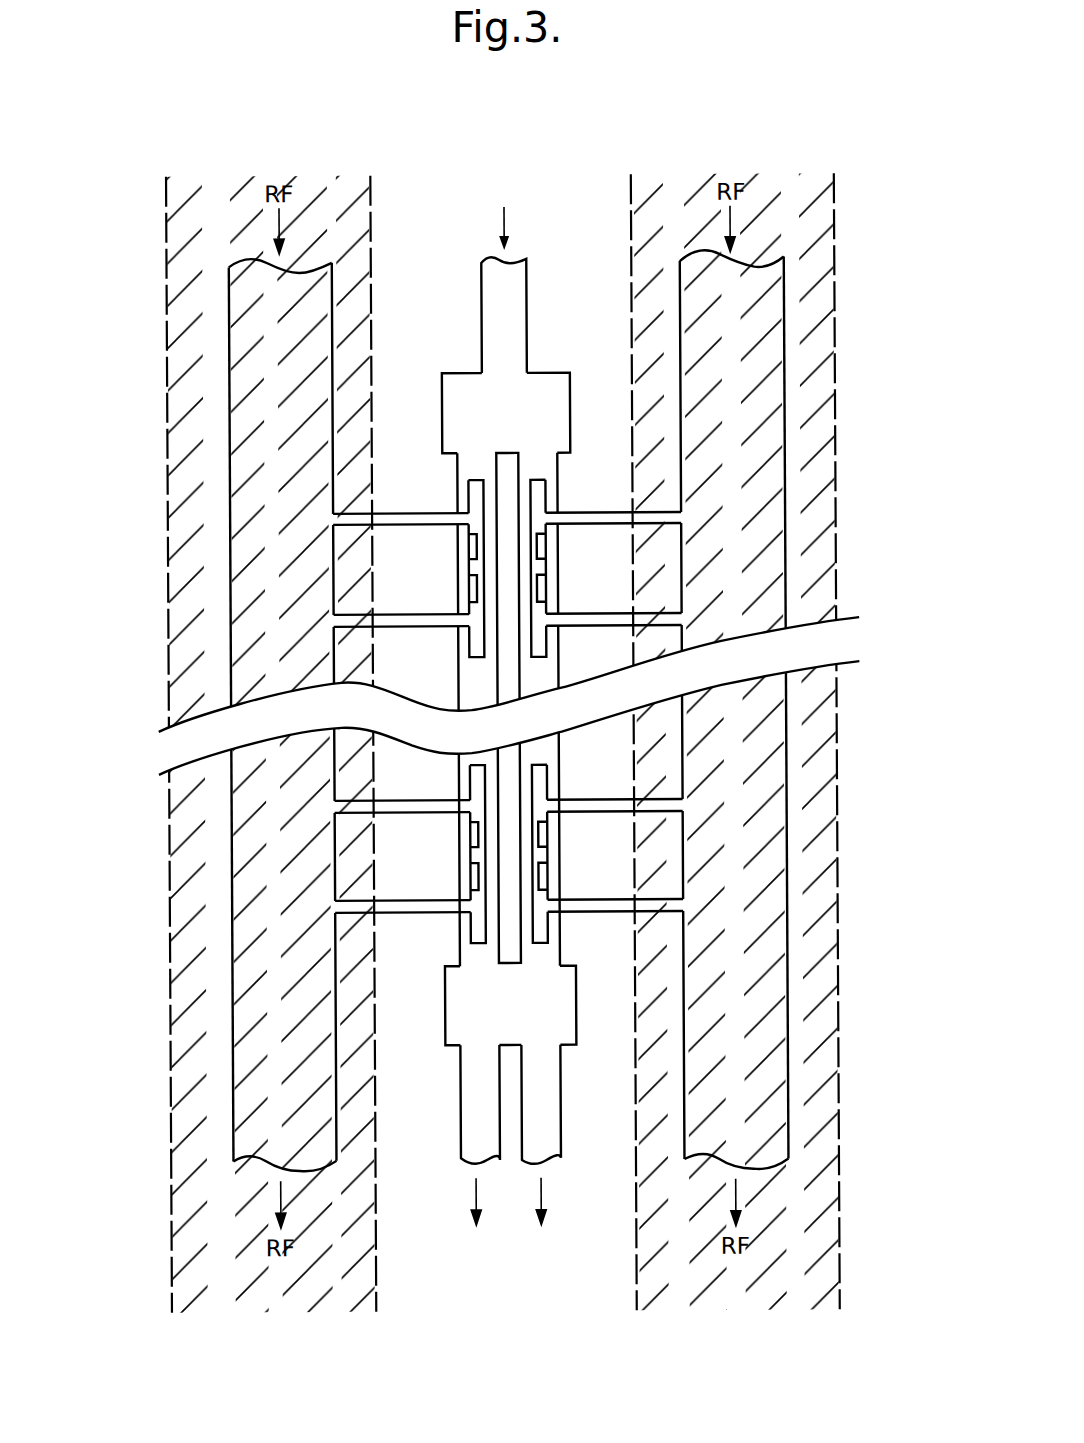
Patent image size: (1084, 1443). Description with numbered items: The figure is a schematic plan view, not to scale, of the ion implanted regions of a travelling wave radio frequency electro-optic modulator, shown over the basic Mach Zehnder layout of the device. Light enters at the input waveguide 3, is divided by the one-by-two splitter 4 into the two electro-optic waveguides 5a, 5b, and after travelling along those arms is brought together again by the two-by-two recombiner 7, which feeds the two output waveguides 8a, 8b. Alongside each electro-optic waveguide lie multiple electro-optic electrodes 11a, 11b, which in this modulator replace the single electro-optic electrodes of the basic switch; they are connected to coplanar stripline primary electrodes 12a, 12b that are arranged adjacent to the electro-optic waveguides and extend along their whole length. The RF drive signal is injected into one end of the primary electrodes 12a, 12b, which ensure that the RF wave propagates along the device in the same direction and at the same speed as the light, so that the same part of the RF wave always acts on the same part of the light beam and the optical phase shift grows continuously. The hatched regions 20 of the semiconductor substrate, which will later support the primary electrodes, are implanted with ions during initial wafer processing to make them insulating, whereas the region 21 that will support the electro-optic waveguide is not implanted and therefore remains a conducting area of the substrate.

The input waveguide 3 is at (508, 303).
The 1×2 splitter 4 is at (551, 405).
The electro-optic waveguide 5a is at (468, 473).
The electro-optic waveguide 5b is at (543, 470).
The 2×2 recombiner 7 is at (540, 1000).
The output waveguide 8a is at (470, 1108).
The output waveguide 8b is at (543, 1108).
The electro-optic electrodes 11a is at (475, 592).
The electro-optic electrodes 11b is at (537, 592).
The coplanar stripline primary electrode 12a is at (246, 330).
The coplanar stripline primary electrode 12b is at (763, 313).
The ion-implanted insulating region 20 is at (244, 186).
The non-implanted conducting region 21 is at (498, 192).